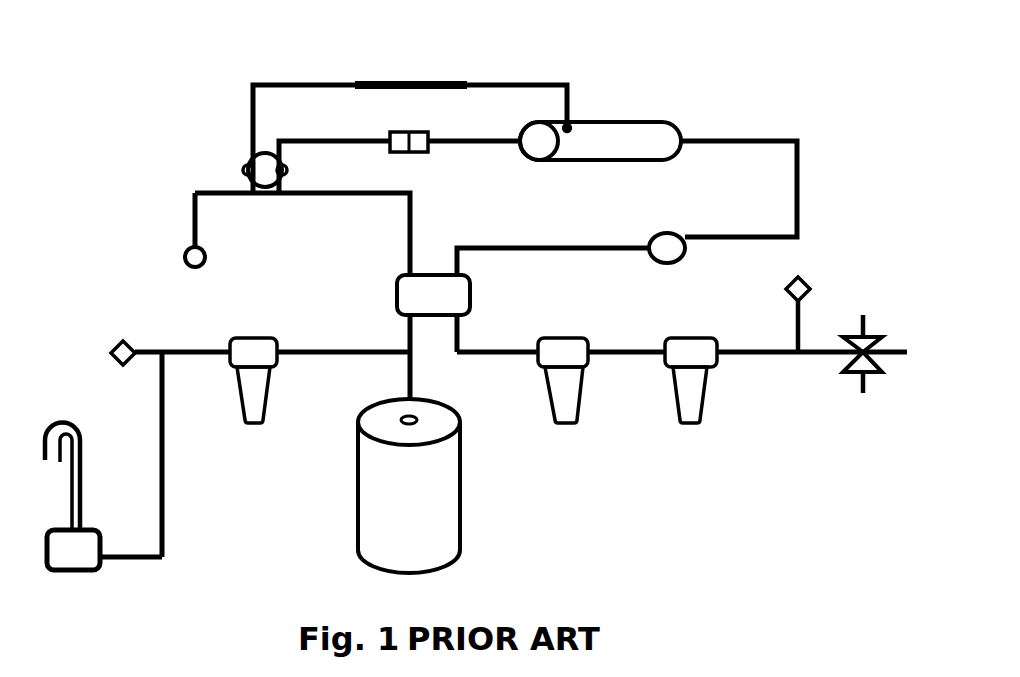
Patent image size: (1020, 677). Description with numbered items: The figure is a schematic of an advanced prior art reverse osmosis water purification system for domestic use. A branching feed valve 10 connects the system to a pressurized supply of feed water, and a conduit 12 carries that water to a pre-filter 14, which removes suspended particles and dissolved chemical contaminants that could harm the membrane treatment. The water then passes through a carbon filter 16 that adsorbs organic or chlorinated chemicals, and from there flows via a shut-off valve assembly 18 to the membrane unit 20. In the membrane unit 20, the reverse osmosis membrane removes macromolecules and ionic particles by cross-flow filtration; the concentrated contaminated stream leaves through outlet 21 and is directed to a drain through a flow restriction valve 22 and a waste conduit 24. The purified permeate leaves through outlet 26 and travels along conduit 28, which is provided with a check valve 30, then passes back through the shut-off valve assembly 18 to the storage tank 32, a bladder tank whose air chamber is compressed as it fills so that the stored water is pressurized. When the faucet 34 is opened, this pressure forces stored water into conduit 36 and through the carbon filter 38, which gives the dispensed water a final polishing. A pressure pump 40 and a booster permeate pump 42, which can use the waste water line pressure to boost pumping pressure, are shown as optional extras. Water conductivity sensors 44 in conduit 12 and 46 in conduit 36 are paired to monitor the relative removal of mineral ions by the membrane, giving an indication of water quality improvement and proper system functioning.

The branching feed valve 10 is at (868, 378).
The conduit 12 is at (822, 352).
The pre-filter 14 is at (690, 388).
The carbon filter 16 is at (560, 388).
The shut-off valve assembly 18 is at (427, 297).
The membrane unit 20 is at (648, 142).
The outlet 21 is at (570, 127).
The flow restriction valve 22 is at (380, 84).
The waste conduit 24 is at (253, 98).
The outlet 26 is at (536, 140).
The conduit 28 is at (453, 143).
The check valve 30 is at (392, 138).
The storage tank 32 is at (412, 532).
The faucet 34 is at (85, 557).
The conduit 36 is at (310, 348).
The carbon filter 38 is at (257, 388).
The pressure pump 40 is at (662, 245).
The booster permeate pump 42 is at (270, 178).
The water conductivity sensor 44 is at (803, 282).
The water conductivity sensor 46 is at (117, 347).